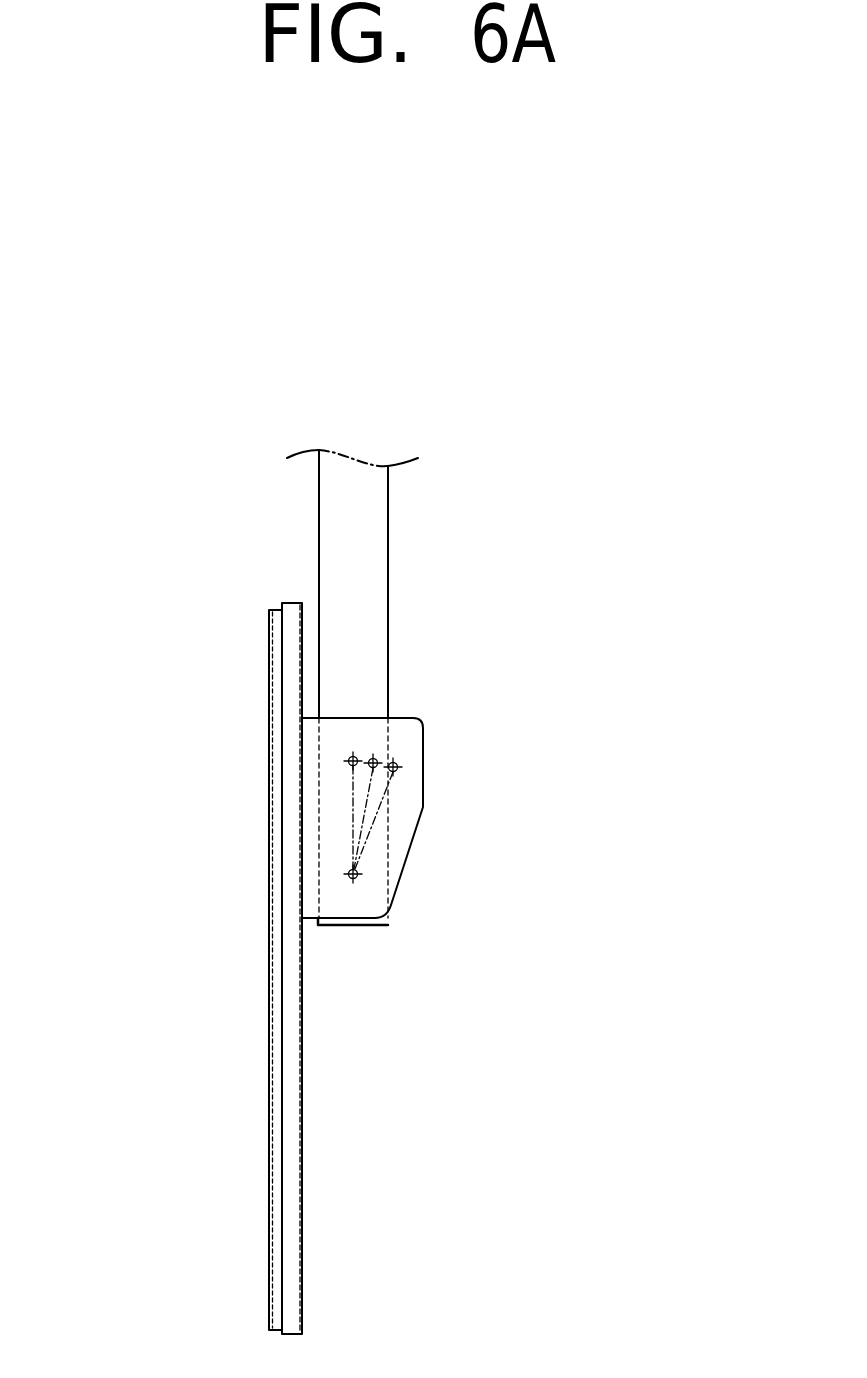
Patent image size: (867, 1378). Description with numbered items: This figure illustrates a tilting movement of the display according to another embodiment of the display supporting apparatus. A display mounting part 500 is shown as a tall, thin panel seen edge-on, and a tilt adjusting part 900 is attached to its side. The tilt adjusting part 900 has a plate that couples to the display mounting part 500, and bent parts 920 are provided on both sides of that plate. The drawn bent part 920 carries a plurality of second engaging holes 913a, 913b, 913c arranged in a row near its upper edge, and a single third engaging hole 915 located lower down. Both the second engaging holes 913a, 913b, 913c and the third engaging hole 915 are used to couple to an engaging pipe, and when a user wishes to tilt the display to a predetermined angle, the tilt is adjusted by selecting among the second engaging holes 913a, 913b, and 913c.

The display mounting part 500 is at (250, 955).
The tilt adjusting part 900 is at (430, 869).
The second engaging hole 913a is at (358, 756).
The second engaging hole 913b is at (377, 762).
The second engaging hole 913c is at (397, 767).
The third engaging hole 915 is at (355, 880).
The bent part 920 is at (343, 735).